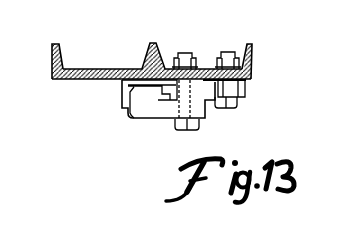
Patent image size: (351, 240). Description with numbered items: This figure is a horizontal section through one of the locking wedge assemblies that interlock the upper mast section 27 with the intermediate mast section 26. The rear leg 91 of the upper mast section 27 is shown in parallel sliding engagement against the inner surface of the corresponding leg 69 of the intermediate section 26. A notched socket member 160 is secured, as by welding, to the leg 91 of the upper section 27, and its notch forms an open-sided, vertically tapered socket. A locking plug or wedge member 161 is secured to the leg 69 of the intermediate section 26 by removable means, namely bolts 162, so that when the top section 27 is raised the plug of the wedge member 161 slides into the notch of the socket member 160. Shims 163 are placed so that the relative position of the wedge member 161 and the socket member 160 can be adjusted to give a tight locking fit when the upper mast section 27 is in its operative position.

The upper mast section 27 is at (51, 63).
The rear leg 91 is at (77, 72).
The intermediate mast section 26 is at (253, 57).
The leg of the intermediate section 69 is at (215, 69).
The notched socket member 160 is at (126, 87).
The wedge member 161 is at (246, 92).
The bolts 162 is at (201, 123).
The shims 163 is at (246, 78).